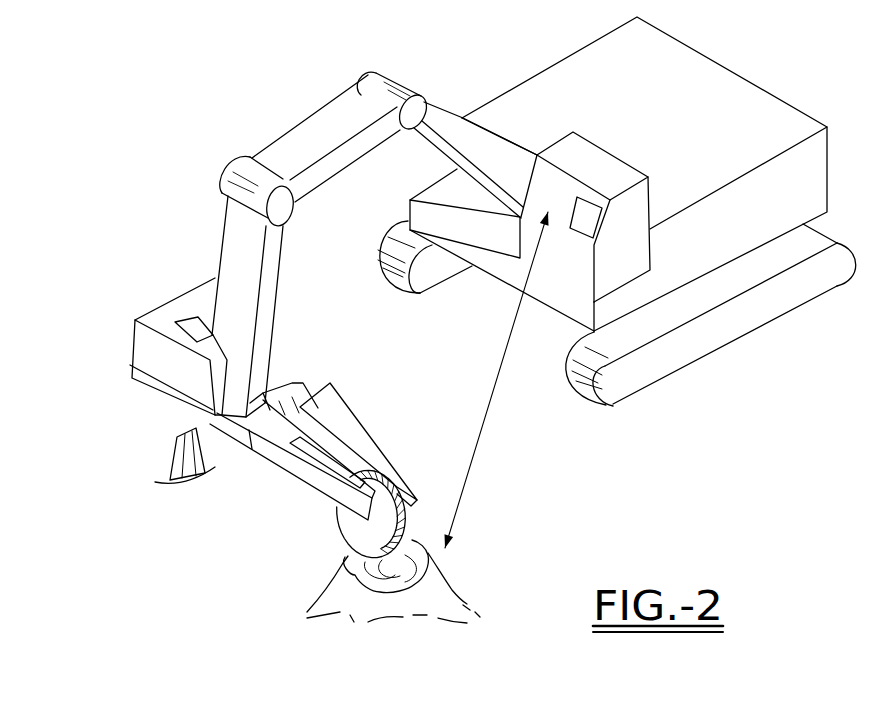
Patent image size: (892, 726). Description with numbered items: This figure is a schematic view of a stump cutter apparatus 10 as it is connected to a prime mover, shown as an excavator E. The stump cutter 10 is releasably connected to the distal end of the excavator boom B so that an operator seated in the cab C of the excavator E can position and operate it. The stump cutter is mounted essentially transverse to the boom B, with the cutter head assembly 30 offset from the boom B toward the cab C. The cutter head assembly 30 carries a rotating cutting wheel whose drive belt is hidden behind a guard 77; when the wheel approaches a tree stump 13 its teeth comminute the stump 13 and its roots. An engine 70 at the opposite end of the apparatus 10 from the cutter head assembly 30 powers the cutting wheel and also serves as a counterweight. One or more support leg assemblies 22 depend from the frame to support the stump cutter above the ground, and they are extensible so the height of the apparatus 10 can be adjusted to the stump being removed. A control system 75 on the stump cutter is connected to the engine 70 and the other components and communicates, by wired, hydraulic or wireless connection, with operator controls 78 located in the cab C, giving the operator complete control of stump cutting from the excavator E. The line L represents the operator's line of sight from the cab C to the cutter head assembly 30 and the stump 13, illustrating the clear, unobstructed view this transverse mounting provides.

The stump cutter apparatus 10 is at (213, 492).
The tree stump 13 is at (434, 568).
The support leg assemblies 22 is at (172, 456).
The cutter head assembly 30 is at (331, 518).
The engine 70 is at (156, 312).
The control system 75 is at (198, 326).
The guard 77 is at (377, 447).
The operator controls 78 is at (581, 228).
The excavator boom B is at (272, 332).
The cab C is at (558, 206).
The excavator E is at (659, 131).
The line of sight L is at (492, 427).